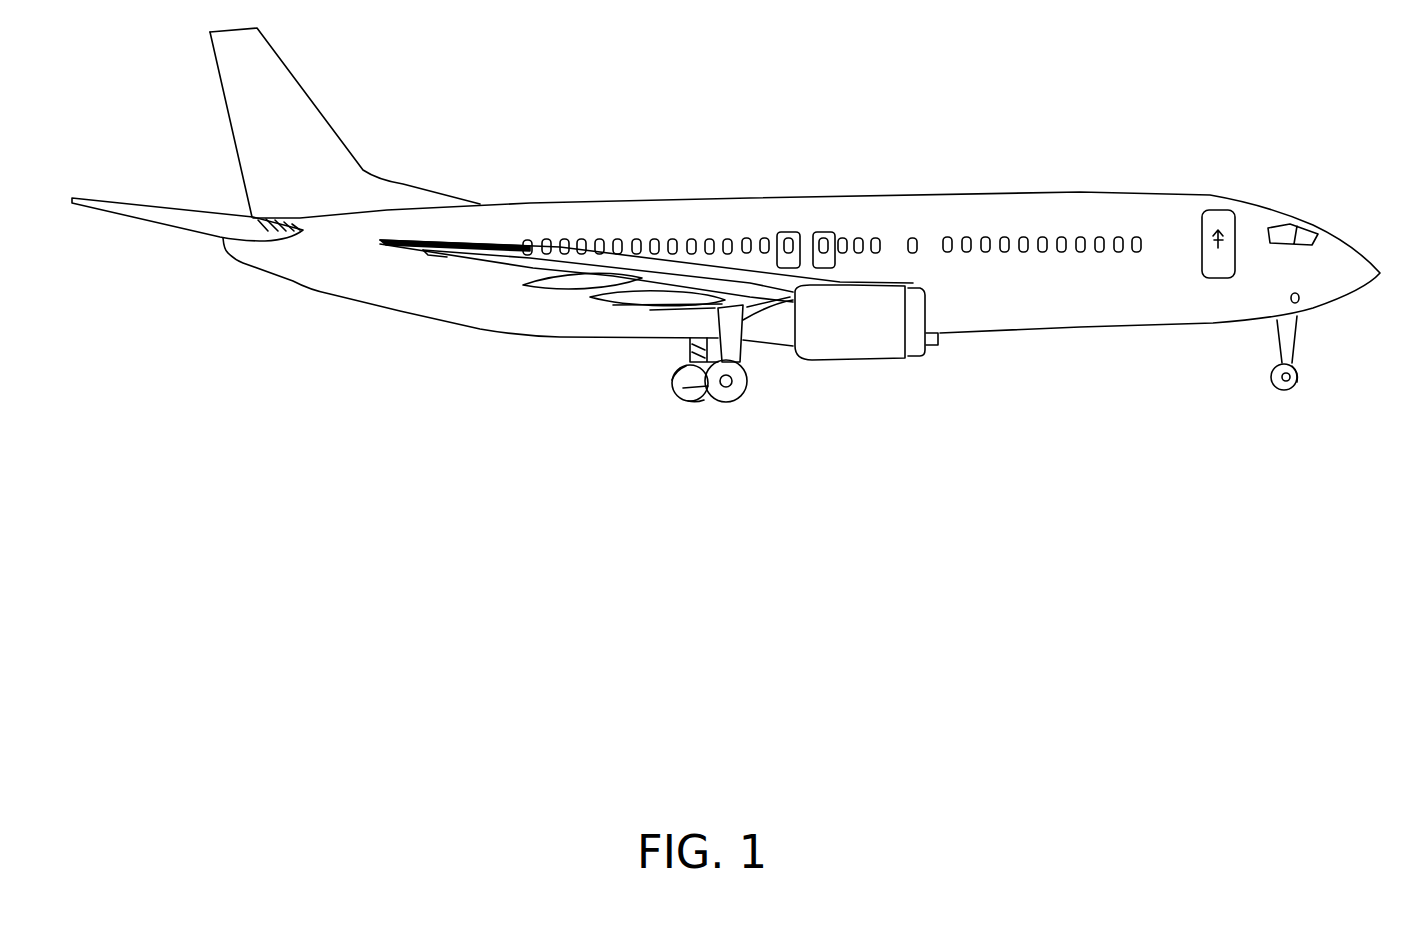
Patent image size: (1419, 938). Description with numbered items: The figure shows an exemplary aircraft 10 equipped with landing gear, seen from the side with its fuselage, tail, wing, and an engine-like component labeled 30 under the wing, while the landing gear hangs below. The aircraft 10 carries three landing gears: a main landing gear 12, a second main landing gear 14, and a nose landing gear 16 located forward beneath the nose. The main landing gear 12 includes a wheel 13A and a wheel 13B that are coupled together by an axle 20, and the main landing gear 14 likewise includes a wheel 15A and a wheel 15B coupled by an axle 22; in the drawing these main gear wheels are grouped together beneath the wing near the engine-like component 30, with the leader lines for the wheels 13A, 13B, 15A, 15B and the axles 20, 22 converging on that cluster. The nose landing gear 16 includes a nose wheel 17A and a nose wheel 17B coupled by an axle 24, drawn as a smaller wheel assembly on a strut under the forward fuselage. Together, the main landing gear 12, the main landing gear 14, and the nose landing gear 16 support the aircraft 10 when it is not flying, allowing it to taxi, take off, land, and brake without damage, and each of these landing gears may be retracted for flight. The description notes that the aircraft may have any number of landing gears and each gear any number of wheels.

The aircraft 10 is at (734, 265).
The main landing gear 12 is at (662, 344).
The wheel 13A is at (677, 370).
The wheel 13B is at (675, 400).
The main landing gear 14 is at (719, 409).
The wheel 15A is at (742, 378).
The wheel 15B is at (700, 402).
The nose landing gear 16 is at (1293, 384).
The nose wheel 17A is at (1270, 377).
The nose wheel 17B is at (1295, 377).
The axle 20 is at (683, 388).
The axle 22 is at (737, 403).
The axle 24 is at (1288, 393).
The engine 30 is at (793, 300).